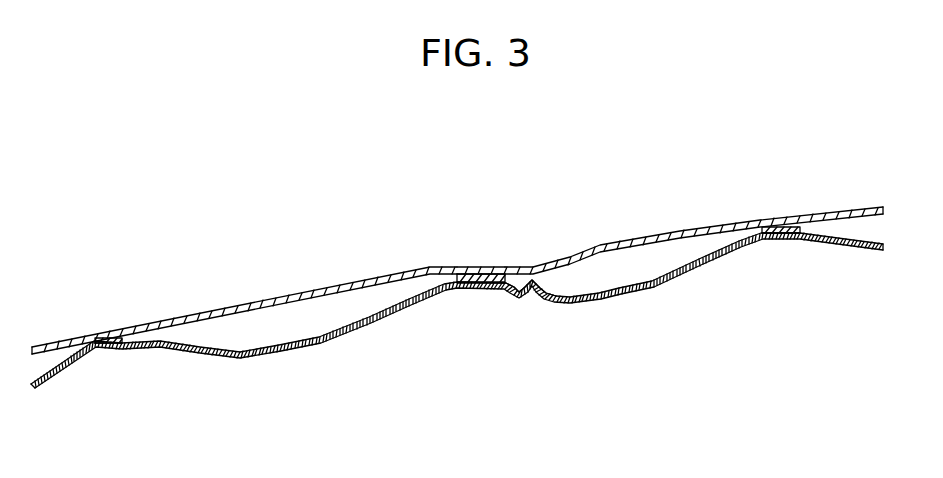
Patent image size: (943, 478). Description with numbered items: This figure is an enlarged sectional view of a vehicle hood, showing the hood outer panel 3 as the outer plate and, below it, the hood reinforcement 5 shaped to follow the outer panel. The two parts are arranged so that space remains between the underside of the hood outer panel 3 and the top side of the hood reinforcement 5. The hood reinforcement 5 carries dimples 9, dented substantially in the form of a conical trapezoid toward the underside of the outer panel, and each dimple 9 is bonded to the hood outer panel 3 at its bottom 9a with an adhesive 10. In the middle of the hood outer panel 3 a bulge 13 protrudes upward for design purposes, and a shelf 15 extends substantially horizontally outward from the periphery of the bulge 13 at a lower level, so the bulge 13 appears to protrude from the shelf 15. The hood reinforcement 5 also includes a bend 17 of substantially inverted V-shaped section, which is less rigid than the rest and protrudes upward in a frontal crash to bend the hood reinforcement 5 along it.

The hood outer panel 3 is at (232, 305).
The bulge 13 is at (682, 229).
The shelf 15 is at (473, 266).
The adhesive 10 is at (108, 336).
The dimple 9 is at (190, 352).
The bottom of dimple 9a is at (120, 349).
The hood reinforcement 5 is at (285, 350).
The bend 17 is at (533, 294).